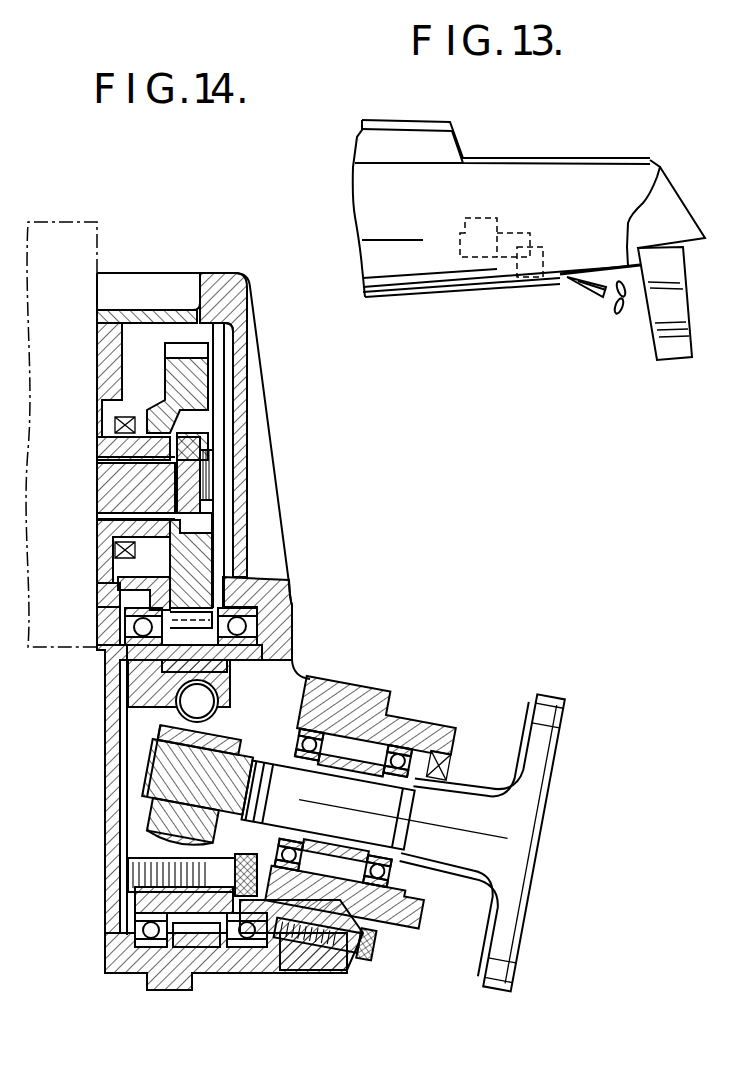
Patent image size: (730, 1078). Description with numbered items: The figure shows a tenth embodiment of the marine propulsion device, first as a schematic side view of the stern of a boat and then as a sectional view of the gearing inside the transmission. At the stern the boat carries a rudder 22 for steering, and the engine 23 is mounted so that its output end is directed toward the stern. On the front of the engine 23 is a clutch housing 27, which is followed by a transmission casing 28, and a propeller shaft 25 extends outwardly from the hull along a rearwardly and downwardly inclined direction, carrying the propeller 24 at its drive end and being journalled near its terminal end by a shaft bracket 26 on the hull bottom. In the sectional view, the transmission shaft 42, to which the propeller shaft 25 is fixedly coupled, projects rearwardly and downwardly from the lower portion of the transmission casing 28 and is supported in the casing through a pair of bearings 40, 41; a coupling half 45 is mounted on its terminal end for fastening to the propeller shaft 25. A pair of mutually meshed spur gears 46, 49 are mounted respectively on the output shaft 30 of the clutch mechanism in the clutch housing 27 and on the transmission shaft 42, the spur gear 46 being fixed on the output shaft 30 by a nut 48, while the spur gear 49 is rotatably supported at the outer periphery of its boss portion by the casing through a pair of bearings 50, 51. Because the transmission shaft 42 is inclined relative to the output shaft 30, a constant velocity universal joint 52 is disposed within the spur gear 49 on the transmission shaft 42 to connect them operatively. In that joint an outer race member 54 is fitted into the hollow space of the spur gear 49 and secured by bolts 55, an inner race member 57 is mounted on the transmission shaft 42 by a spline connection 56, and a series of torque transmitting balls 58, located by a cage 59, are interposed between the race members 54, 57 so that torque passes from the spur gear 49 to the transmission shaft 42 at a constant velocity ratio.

In FIG. 13, the rudder 22 is at (667, 347).
In FIG. 13, the engine 23 is at (477, 218).
In FIG. 13, the propeller 24 is at (613, 310).
In FIG. 13, the propeller shaft 25 is at (578, 290).
In FIG. 13, the shaft bracket 26 is at (657, 168).
In FIG. 13, the clutch housing 27 is at (510, 233).
In FIG. 14, the clutch housing 27 is at (60, 240).
In FIG. 13, the transmission casing 28 is at (533, 247).
In FIG. 14, the transmission casing 28 is at (128, 320).
In FIG. 14, the output shaft 30 is at (128, 490).
In FIG. 14, the bearing 40 is at (320, 723).
In FIG. 14, the bearing 41 is at (403, 930).
In FIG. 14, the transmission shaft 42 is at (367, 933).
In FIG. 14, the coupling half 45 is at (483, 987).
In FIG. 14, the spur gear 46 is at (185, 353).
In FIG. 14, the nut 48 is at (213, 523).
In FIG. 14, the spur gear 49 is at (207, 930).
In FIG. 14, the bearing 50 is at (243, 610).
In FIG. 14, the bearing 51 is at (128, 625).
In FIG. 14, the constant velocity universal joint 52 is at (148, 738).
In FIG. 14, the outer race member 54 is at (167, 667).
In FIG. 14, the bolts 55 is at (147, 990).
In FIG. 14, the spline connection 56 is at (212, 744).
In FIG. 14, the inner race member 57 is at (160, 815).
In FIG. 14, the torque transmitting balls 58 is at (287, 642).
In FIG. 14, the cage 59 is at (153, 848).